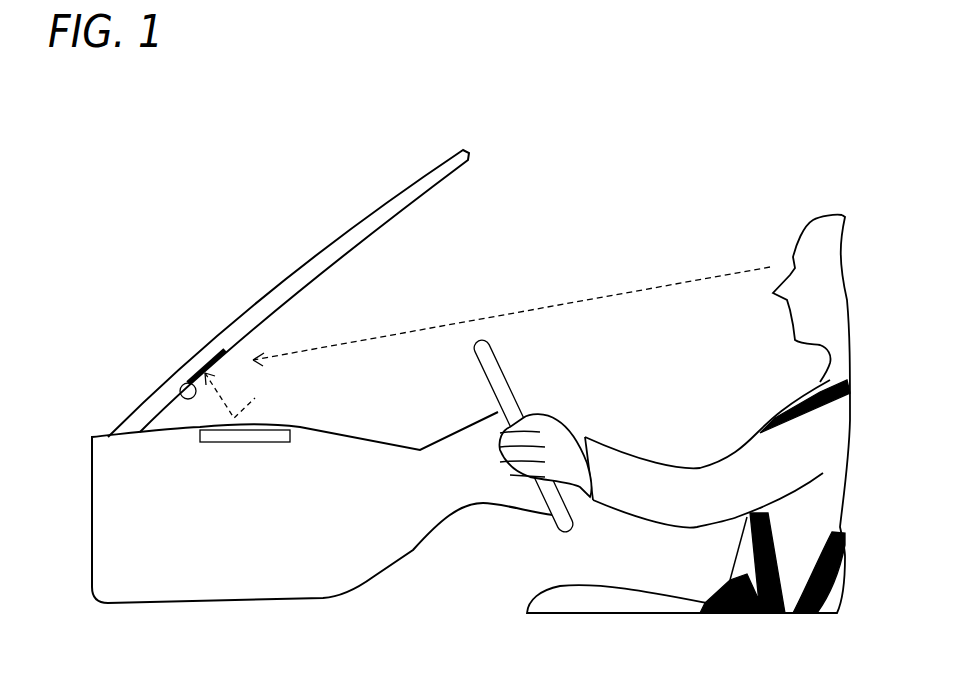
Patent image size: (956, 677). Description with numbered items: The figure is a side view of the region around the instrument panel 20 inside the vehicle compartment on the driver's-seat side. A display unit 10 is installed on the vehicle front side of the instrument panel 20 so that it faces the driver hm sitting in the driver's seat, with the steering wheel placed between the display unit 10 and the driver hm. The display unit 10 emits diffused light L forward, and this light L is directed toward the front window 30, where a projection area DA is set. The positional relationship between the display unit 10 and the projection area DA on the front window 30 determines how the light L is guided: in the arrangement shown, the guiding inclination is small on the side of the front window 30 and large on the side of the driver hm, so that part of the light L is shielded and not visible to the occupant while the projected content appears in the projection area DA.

The display unit 10 is at (263, 434).
The instrument panel 20 is at (360, 433).
The front window 30 is at (403, 207).
The projection area DA is at (178, 396).
The light L is at (240, 395).
The driver hm is at (820, 380).